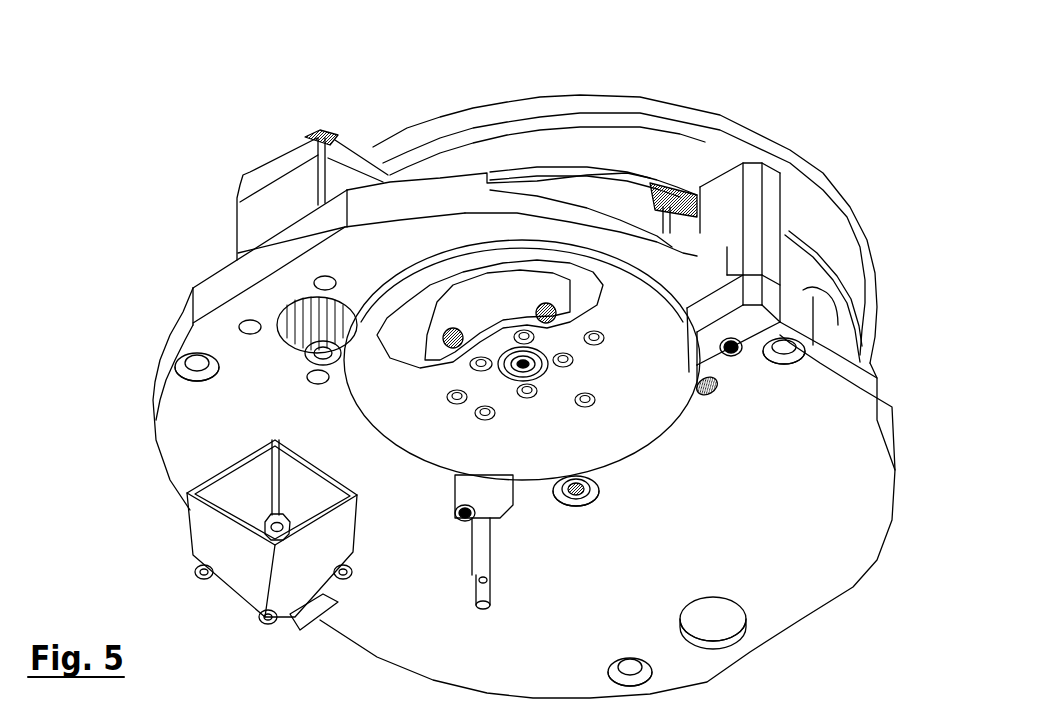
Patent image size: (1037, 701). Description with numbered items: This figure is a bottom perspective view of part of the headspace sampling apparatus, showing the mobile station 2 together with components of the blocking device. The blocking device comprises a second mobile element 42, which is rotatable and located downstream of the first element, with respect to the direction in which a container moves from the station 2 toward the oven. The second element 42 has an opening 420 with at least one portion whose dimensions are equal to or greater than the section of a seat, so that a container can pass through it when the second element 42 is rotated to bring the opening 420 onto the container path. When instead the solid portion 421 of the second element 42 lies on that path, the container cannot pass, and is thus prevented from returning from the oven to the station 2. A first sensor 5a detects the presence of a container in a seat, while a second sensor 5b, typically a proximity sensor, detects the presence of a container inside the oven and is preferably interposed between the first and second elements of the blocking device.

The mobile station 2 is at (625, 215).
The first sensor 5a is at (633, 122).
The second sensor 5b is at (852, 408).
The second mobile element 42 is at (676, 392).
The opening 420 is at (450, 209).
The solid portion 421 is at (719, 481).